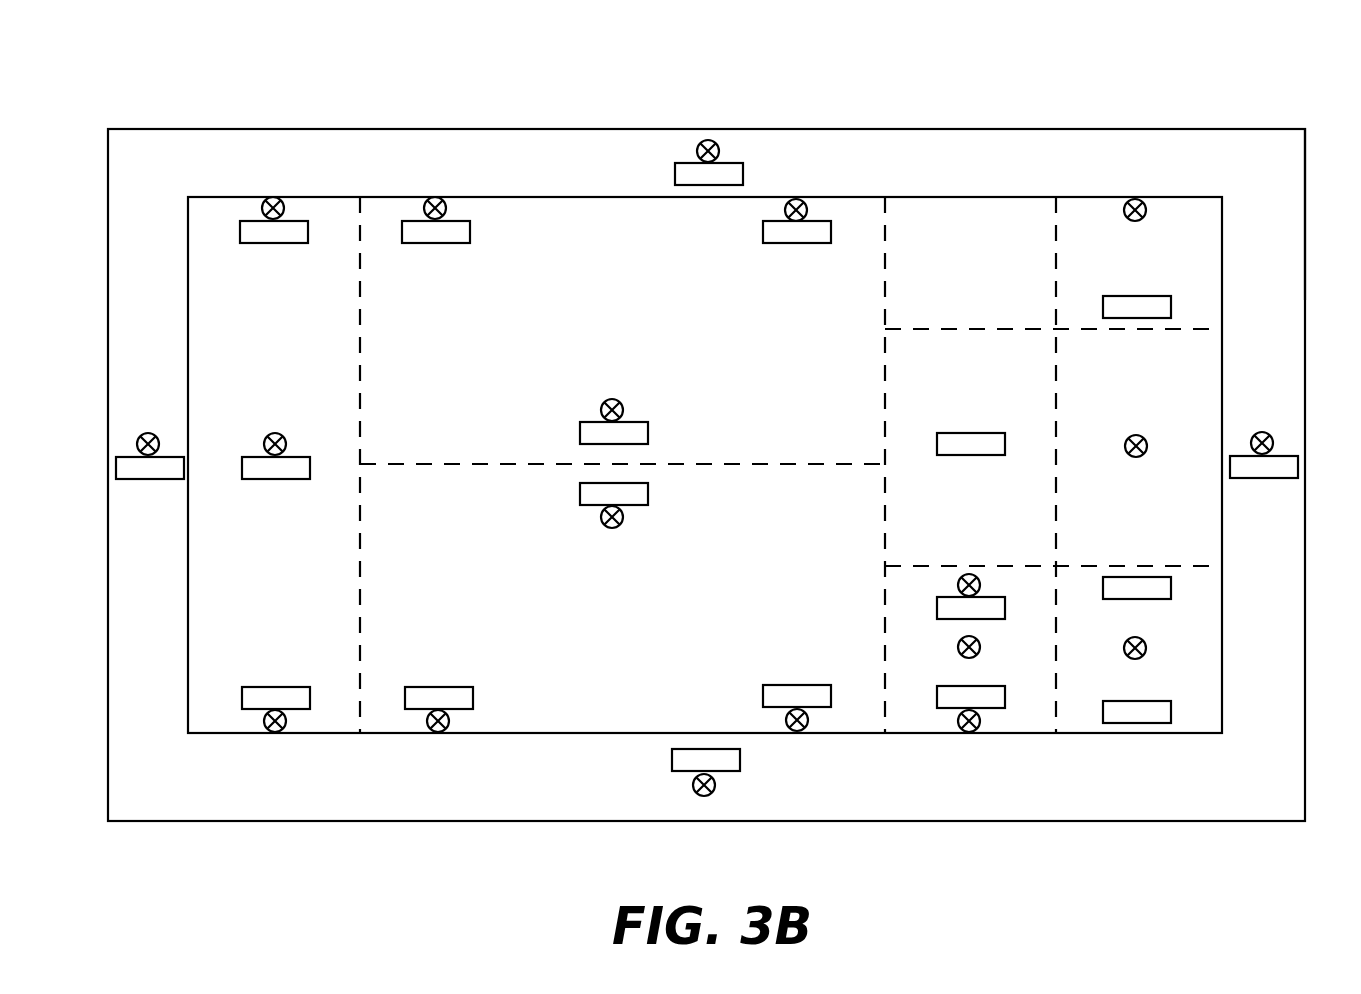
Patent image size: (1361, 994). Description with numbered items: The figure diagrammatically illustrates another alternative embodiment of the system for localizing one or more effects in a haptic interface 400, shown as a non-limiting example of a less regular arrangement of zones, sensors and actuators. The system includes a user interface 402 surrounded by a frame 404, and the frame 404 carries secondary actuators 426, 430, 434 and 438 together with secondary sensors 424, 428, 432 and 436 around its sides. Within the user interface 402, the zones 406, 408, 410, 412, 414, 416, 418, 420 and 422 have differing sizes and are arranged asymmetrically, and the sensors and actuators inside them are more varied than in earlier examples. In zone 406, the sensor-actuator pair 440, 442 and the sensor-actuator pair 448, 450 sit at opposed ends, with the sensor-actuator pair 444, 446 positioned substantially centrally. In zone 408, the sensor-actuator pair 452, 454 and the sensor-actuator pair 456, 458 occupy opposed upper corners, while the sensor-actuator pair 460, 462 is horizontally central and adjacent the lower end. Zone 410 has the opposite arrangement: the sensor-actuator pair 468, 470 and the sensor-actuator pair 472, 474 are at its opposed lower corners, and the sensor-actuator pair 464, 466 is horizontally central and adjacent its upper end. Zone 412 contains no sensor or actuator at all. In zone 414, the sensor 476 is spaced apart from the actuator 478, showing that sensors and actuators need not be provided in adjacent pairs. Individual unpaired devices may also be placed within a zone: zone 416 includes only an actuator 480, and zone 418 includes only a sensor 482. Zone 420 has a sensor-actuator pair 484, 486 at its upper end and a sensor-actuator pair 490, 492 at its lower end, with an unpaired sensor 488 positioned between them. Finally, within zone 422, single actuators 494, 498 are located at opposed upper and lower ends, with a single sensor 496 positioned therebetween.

The system for localizing one or more effects in a haptic interface 400 is at (172, 100).
The user interface 402 is at (206, 312).
The frame 404 is at (1262, 135).
The zone 406 is at (218, 222).
The zone 408 is at (542, 220).
The zone 410 is at (495, 716).
The zone 412 is at (1026, 222).
The zone 414 is at (1193, 222).
The zone 416 is at (923, 362).
The zone 418 is at (1197, 357).
The zone 420 is at (1022, 718).
The zone 422 is at (1206, 718).
The secondary sensor 424 is at (140, 433).
The secondary actuator 426 is at (132, 480).
The secondary sensor 428 is at (722, 142).
The secondary actuator 430 is at (676, 162).
The secondary sensor 432 is at (1270, 432).
The secondary actuator 434 is at (1237, 479).
The secondary sensor 436 is at (703, 797).
The secondary actuator 438 is at (738, 773).
The sensor 440 is at (288, 200).
The actuator 442 is at (240, 235).
The sensor 444 is at (273, 432).
The actuator 446 is at (273, 480).
The sensor 448 is at (272, 733).
The actuator 450 is at (310, 692).
The sensor 452 is at (448, 200).
The actuator 454 is at (440, 244).
The sensor 456 is at (788, 200).
The actuator 458 is at (830, 243).
The sensor 460 is at (602, 400).
The actuator 462 is at (648, 436).
The sensor 464 is at (612, 529).
The actuator 466 is at (648, 496).
The sensor 468 is at (436, 733).
The actuator 470 is at (474, 692).
The sensor 472 is at (803, 732).
The actuator 474 is at (834, 692).
The sensor 476 is at (1126, 200).
The actuator 478 is at (1160, 294).
The actuator 480 is at (987, 432).
The sensor 482 is at (1148, 436).
The sensor 484 is at (970, 575).
The actuator 486 is at (1000, 597).
The sensor 488 is at (958, 648).
The sensor 490 is at (969, 733).
The actuator 492 is at (1006, 693).
The actuator 494 is at (1171, 591).
The sensor 496 is at (1147, 647).
The actuator 498 is at (1128, 724).